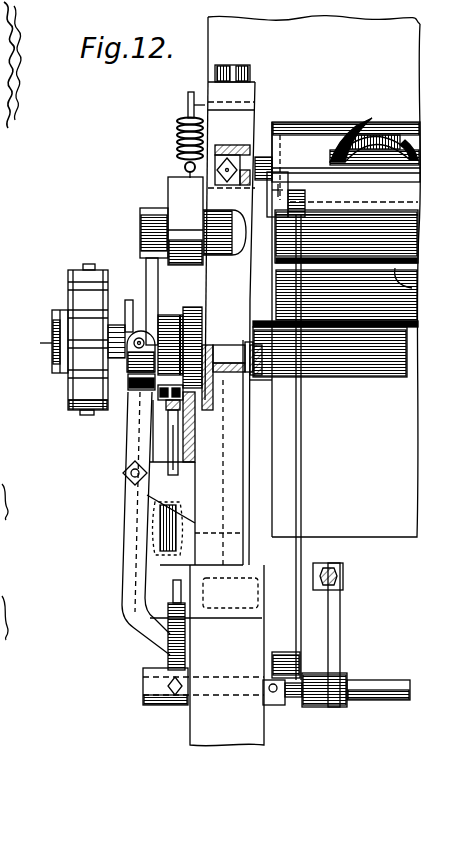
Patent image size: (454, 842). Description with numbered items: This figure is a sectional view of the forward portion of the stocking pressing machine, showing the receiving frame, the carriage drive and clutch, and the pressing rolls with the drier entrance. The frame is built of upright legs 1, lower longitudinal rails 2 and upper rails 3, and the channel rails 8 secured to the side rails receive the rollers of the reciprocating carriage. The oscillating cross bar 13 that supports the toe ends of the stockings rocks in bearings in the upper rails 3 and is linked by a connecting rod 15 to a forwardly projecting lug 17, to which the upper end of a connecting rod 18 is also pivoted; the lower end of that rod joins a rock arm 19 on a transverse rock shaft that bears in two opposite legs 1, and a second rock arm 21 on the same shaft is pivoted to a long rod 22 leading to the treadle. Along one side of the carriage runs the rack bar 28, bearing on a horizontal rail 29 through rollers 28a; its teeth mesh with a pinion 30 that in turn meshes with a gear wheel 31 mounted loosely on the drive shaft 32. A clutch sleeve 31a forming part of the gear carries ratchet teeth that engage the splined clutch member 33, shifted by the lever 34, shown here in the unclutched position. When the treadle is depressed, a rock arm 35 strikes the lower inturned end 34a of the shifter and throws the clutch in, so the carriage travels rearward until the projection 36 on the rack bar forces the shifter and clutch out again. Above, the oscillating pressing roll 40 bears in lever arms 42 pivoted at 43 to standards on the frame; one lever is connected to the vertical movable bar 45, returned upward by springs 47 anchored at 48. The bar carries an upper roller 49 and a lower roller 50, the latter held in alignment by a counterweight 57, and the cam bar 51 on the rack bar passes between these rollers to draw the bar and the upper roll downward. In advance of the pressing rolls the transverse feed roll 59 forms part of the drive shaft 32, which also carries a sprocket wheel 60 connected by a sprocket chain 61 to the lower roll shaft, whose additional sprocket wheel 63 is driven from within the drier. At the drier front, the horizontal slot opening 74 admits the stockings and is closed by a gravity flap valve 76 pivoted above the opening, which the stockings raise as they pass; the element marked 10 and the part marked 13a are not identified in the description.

The upright supports or legs 1 is at (203, 604).
The longitudinal horizontal rails 2 is at (270, 394).
The longitudinal horizontal rails 3 is at (228, 150).
The rails 8 is at (245, 345).
The shaft 10 is at (398, 683).
The oscillating cross bar 13 is at (300, 170).
The opening 13a is at (372, 130).
The connecting rod 15 is at (302, 190).
The forwardly projecting lug 17 is at (346, 227).
The connecting rod 18 is at (302, 475).
The rock arm 19 is at (285, 652).
The rock arm 21 is at (342, 630).
The long rod 22 is at (345, 580).
The rack bar 28 is at (240, 374).
The rollers 28a is at (196, 423).
The horizontal rail 29 is at (196, 455).
The pinion 30 is at (262, 377).
The gear wheel 31 is at (204, 318).
The clutch member or sleeve 31a is at (178, 312).
The drive shaft 32 is at (52, 337).
The clutch or sleeve 33 is at (128, 300).
The lever 34 is at (124, 428).
The lower inturned end 34a is at (150, 643).
The rock arm 35 is at (176, 613).
The projection 36 is at (142, 404).
The oscillating pressing roll 40 is at (346, 236).
The lever arms 42 is at (168, 189).
The pivot 43 is at (224, 221).
The vertical movable bar 45 is at (145, 238).
The springs 47 is at (178, 133).
The spring attachment point 48 is at (187, 98).
The upper roller 49 is at (245, 350).
The roller 50 is at (182, 442).
The cam bar or plate 51 is at (168, 418).
The counterweight 57 is at (177, 526).
The transverse feed roll 59 is at (335, 349).
The sprocket wheel 60 is at (68, 287).
The sprocket chain 61 is at (88, 264).
The sprocket wheel 63 is at (331, 276).
The horizontal slot opening 74 is at (412, 288).
The flap valve 76 is at (346, 295).